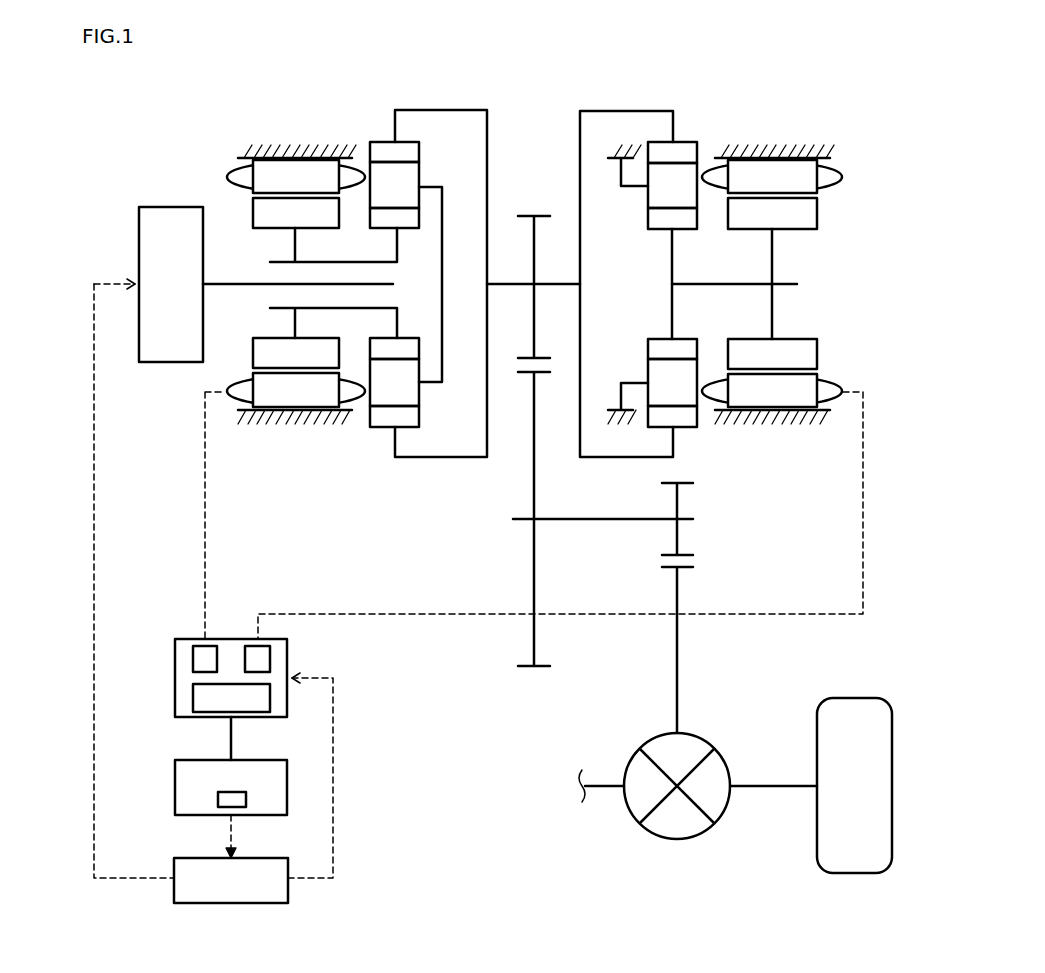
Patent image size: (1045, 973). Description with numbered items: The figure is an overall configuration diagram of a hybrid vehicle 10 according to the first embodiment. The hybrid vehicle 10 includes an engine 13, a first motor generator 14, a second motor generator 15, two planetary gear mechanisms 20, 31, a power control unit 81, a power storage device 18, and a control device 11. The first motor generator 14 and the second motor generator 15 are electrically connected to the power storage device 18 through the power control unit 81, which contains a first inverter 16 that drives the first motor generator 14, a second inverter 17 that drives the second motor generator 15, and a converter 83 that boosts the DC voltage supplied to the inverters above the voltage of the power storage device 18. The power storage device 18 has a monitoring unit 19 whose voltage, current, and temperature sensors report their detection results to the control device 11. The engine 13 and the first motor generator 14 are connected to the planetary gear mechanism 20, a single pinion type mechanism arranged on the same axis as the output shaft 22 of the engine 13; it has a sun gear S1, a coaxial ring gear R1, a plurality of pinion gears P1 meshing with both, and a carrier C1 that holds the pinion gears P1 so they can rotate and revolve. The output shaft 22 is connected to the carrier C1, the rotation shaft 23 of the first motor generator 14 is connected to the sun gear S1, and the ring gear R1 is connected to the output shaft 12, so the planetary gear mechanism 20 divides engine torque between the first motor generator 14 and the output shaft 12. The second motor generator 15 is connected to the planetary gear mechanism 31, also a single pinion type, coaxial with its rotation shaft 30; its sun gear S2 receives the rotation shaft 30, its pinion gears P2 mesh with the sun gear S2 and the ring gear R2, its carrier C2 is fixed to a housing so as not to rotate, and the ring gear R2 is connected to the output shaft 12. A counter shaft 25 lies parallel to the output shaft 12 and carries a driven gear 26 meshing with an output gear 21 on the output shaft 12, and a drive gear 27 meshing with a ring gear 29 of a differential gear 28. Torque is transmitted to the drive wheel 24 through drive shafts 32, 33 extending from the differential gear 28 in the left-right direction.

The hybrid vehicle 10 is at (786, 64).
The control device 11 is at (277, 858).
The output shaft 12 is at (513, 281).
The engine 13 is at (162, 207).
The first motor generator 14 is at (218, 155).
The second motor generator 15 is at (848, 158).
The first inverter 16 is at (193, 652).
The second inverter 17 is at (270, 652).
The power storage device 18 is at (277, 760).
The monitoring unit 19 is at (218, 801).
The planetary gear mechanism 20 is at (363, 118).
The output gear 21 is at (538, 357).
The output shaft 22 is at (223, 286).
The rotation shaft 23 is at (275, 262).
The drive wheel 24 is at (852, 697).
The counter shaft 25 is at (590, 521).
The driven gear 26 is at (540, 374).
The drive gear 27 is at (683, 487).
The differential gear 28 is at (698, 742).
The ring gear 29 is at (683, 570).
The rotation shaft 30 is at (790, 283).
The planetary gear mechanism 31 is at (665, 100).
The drive shaft 32 is at (600, 790).
The drive shaft 33 is at (773, 790).
The power control unit 81 is at (175, 672).
The converter 83 is at (193, 702).
The ring gear R1 is at (408, 150).
The pinion gear P1 is at (378, 190).
The sun gear S1 is at (408, 225).
The carrier C1 is at (443, 205).
The ring gear R2 is at (688, 148).
The pinion gear P2 is at (692, 190).
The sun gear S2 is at (660, 222).
The carrier C2 is at (630, 192).